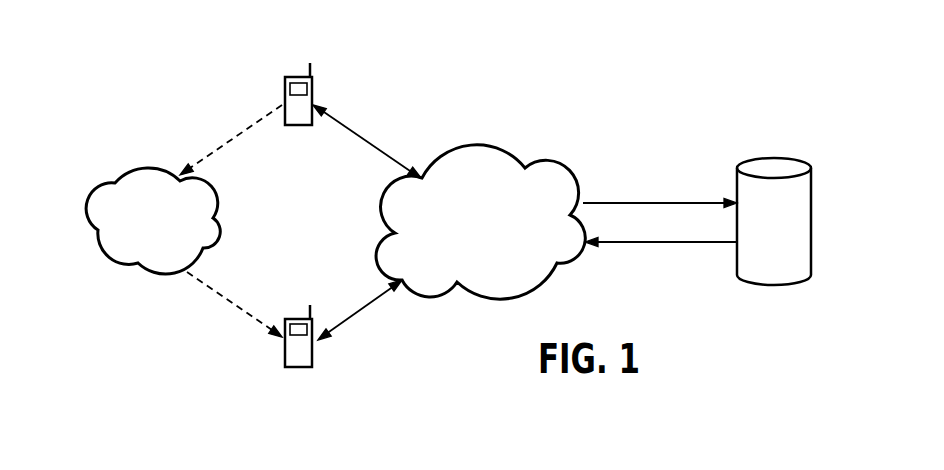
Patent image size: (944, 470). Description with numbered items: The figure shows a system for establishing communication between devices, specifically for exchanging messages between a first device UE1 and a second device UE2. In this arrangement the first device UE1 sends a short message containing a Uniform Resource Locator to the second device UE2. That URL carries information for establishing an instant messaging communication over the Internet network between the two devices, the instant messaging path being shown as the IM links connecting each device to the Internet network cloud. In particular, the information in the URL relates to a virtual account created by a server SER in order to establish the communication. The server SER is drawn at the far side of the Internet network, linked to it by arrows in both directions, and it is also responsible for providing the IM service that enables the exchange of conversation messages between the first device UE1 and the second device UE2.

The first device UE1 is at (295, 77).
The second device UE2 is at (302, 368).
The server SER is at (797, 170).
The IM service IM is at (352, 130).